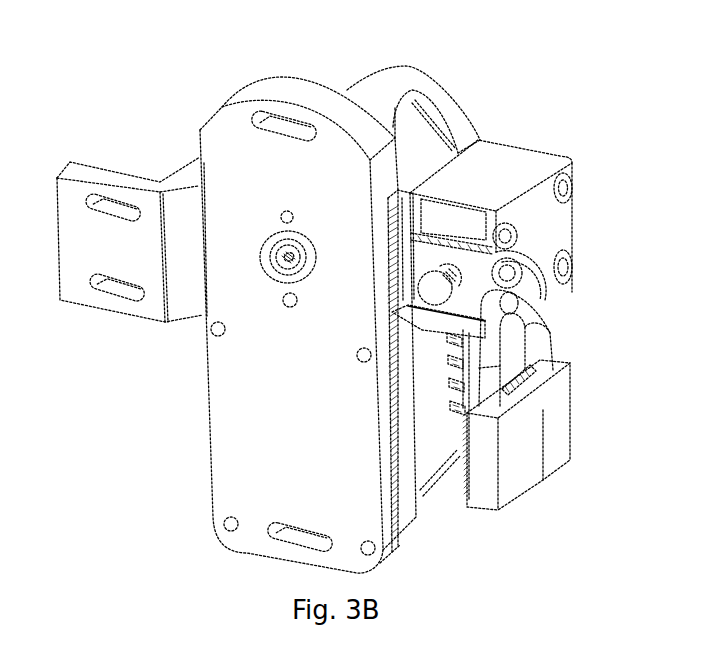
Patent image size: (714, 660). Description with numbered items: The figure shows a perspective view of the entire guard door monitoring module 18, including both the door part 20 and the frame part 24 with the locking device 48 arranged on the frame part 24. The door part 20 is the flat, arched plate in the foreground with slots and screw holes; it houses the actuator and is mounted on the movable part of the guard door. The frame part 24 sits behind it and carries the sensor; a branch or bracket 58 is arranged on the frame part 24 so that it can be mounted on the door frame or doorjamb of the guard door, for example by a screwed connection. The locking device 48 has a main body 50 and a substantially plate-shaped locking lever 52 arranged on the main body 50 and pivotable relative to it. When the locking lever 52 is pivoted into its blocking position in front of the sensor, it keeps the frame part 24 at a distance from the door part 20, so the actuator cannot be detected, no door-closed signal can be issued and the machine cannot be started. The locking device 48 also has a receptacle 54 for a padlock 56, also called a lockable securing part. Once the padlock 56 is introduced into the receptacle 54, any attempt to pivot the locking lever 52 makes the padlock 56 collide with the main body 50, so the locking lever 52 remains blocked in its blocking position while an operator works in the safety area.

The guard door monitoring module 18 is at (270, 69).
The door part 20 is at (237, 417).
The frame part 24 is at (406, 86).
The locking device 48 is at (503, 169).
The main body 50 is at (557, 230).
The locking lever 52 is at (528, 289).
The receptacle 54 is at (527, 308).
The padlock 56 is at (557, 425).
The bracket 58 is at (183, 207).